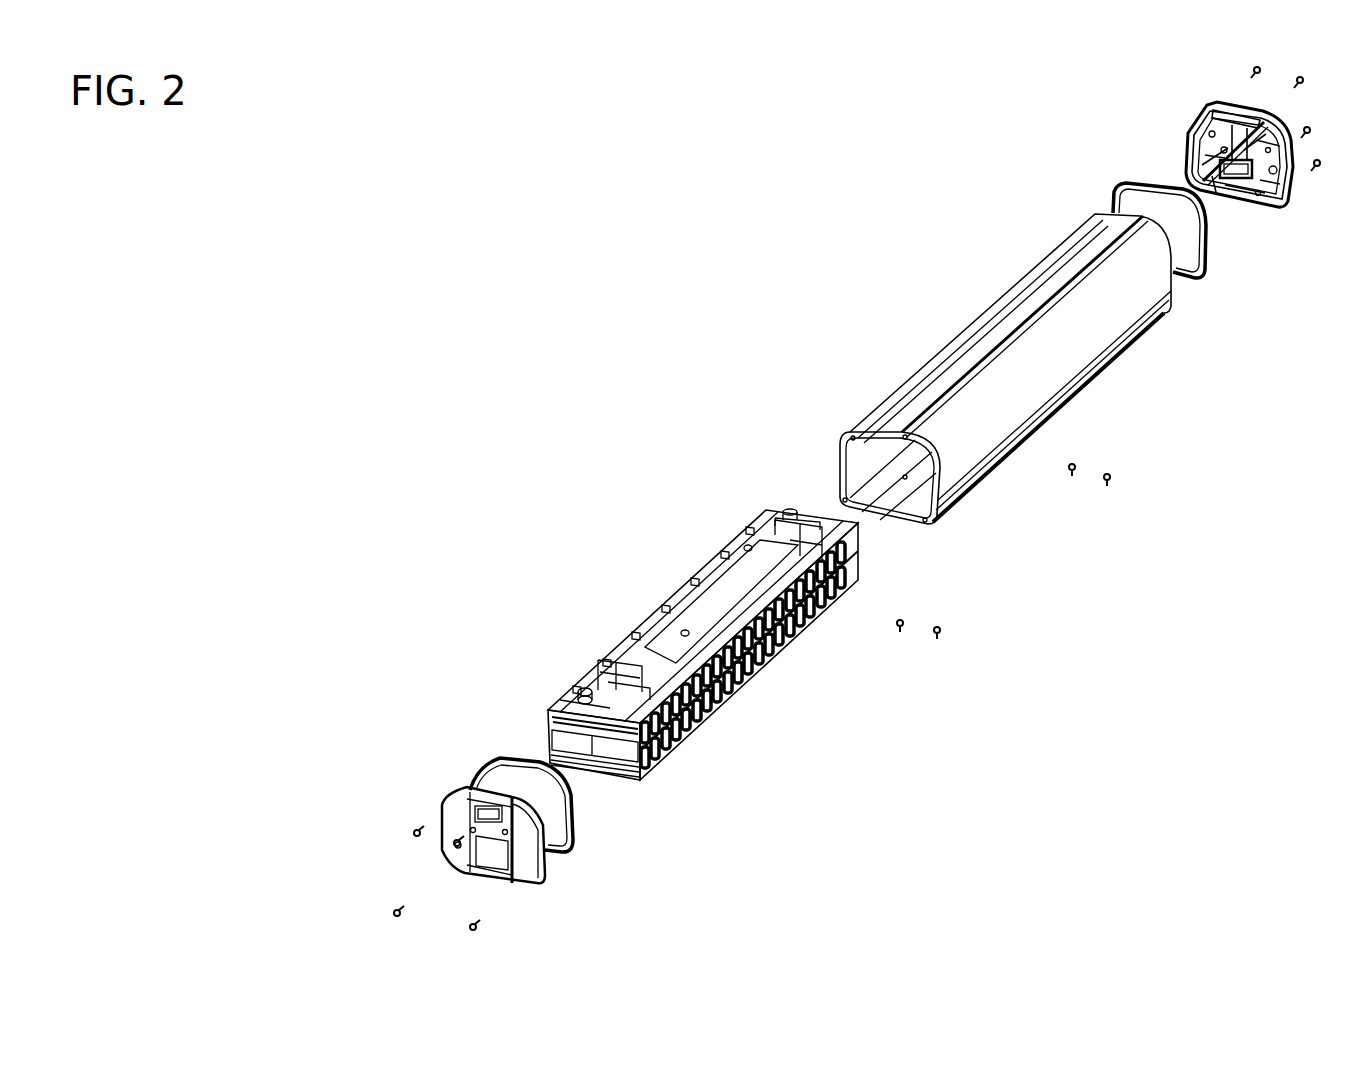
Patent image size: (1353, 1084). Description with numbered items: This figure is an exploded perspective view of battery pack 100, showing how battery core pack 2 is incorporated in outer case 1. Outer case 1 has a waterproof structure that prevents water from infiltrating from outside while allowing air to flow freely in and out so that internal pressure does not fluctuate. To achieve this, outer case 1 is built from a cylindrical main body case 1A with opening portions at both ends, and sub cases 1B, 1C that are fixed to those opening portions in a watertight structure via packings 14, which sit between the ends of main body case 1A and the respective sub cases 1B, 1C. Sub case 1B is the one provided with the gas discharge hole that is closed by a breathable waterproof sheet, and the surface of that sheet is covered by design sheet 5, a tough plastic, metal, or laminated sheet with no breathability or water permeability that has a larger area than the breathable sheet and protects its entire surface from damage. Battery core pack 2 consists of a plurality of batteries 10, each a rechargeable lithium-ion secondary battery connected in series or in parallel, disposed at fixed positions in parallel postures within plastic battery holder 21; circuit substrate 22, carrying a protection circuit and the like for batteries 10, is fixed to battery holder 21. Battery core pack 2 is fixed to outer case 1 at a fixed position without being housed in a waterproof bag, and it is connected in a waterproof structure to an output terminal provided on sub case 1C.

The battery pack 100 is at (587, 267).
The outer case 1 is at (1327, 408).
The main body case 1A is at (1053, 357).
The sub case 1B is at (543, 853).
The sub case 1C is at (1258, 208).
The battery core pack 2 is at (652, 570).
The design sheet 5 is at (493, 857).
The battery 10 is at (600, 716).
The packing 14 is at (1157, 187).
The battery holder 21 is at (550, 740).
The circuit substrate 22 is at (817, 510).